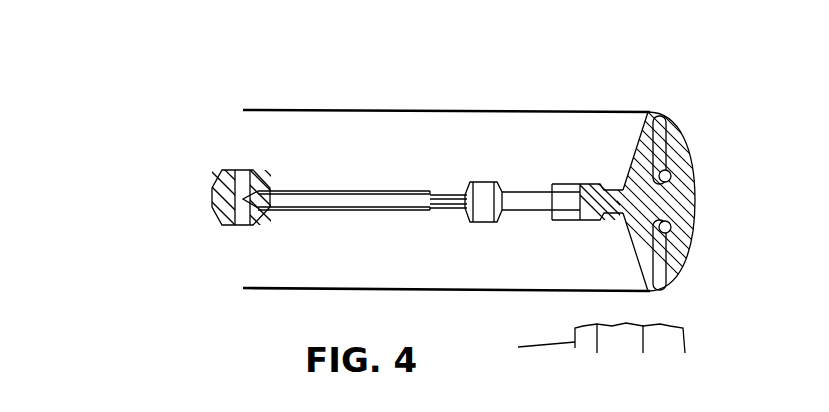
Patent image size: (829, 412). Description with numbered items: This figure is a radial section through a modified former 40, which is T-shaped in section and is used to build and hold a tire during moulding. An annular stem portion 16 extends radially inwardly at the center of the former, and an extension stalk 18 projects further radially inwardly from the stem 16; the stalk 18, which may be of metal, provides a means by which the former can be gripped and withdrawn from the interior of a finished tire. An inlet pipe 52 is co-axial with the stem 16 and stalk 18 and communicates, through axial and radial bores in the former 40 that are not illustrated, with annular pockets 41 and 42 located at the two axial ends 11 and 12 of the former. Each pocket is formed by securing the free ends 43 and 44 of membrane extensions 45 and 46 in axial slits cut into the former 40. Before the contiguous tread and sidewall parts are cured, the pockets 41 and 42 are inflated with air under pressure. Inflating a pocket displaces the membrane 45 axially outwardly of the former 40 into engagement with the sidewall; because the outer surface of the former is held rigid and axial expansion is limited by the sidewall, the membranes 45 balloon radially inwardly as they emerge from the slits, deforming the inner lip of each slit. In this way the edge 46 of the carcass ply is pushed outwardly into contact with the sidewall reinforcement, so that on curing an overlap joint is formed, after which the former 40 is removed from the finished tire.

The axial end of the former 11 is at (672, 112).
The axial end of the former 12 is at (660, 297).
The stem portion 16 is at (615, 208).
The extension stalk 18 is at (538, 202).
The former 40 is at (640, 178).
The annular pocket 41 is at (650, 111).
The annular pocket 42 is at (647, 292).
The free end of membrane extension 43 is at (672, 172).
The free end of membrane extension 44 is at (672, 232).
The membrane extension 45 is at (658, 153).
The membrane extension 46 is at (655, 266).
The inlet pipe 52 is at (435, 193).